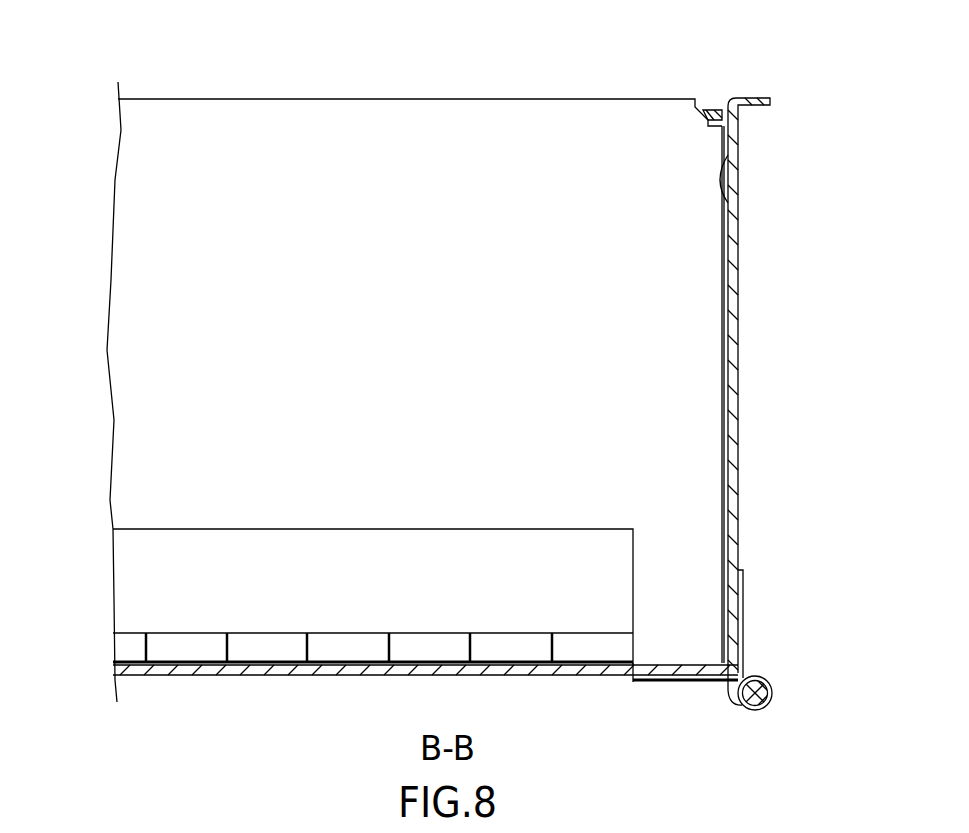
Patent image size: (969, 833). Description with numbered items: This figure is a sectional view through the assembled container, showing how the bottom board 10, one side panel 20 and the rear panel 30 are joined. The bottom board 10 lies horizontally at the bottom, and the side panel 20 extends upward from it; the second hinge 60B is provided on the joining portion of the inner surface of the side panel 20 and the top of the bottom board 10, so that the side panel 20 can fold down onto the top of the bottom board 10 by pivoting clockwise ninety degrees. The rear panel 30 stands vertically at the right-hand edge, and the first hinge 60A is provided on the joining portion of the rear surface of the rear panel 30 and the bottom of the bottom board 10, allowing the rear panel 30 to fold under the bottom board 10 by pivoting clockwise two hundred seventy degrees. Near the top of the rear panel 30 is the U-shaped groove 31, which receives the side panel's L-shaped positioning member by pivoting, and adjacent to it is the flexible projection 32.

The bottom board 10 is at (268, 668).
The side panel 20 is at (350, 145).
The rear panel 30 is at (735, 372).
The U-shaped groove 31 is at (722, 117).
The flexible projection 32 is at (722, 183).
The first hinge 60A is at (752, 680).
The second hinge 60B is at (178, 643).